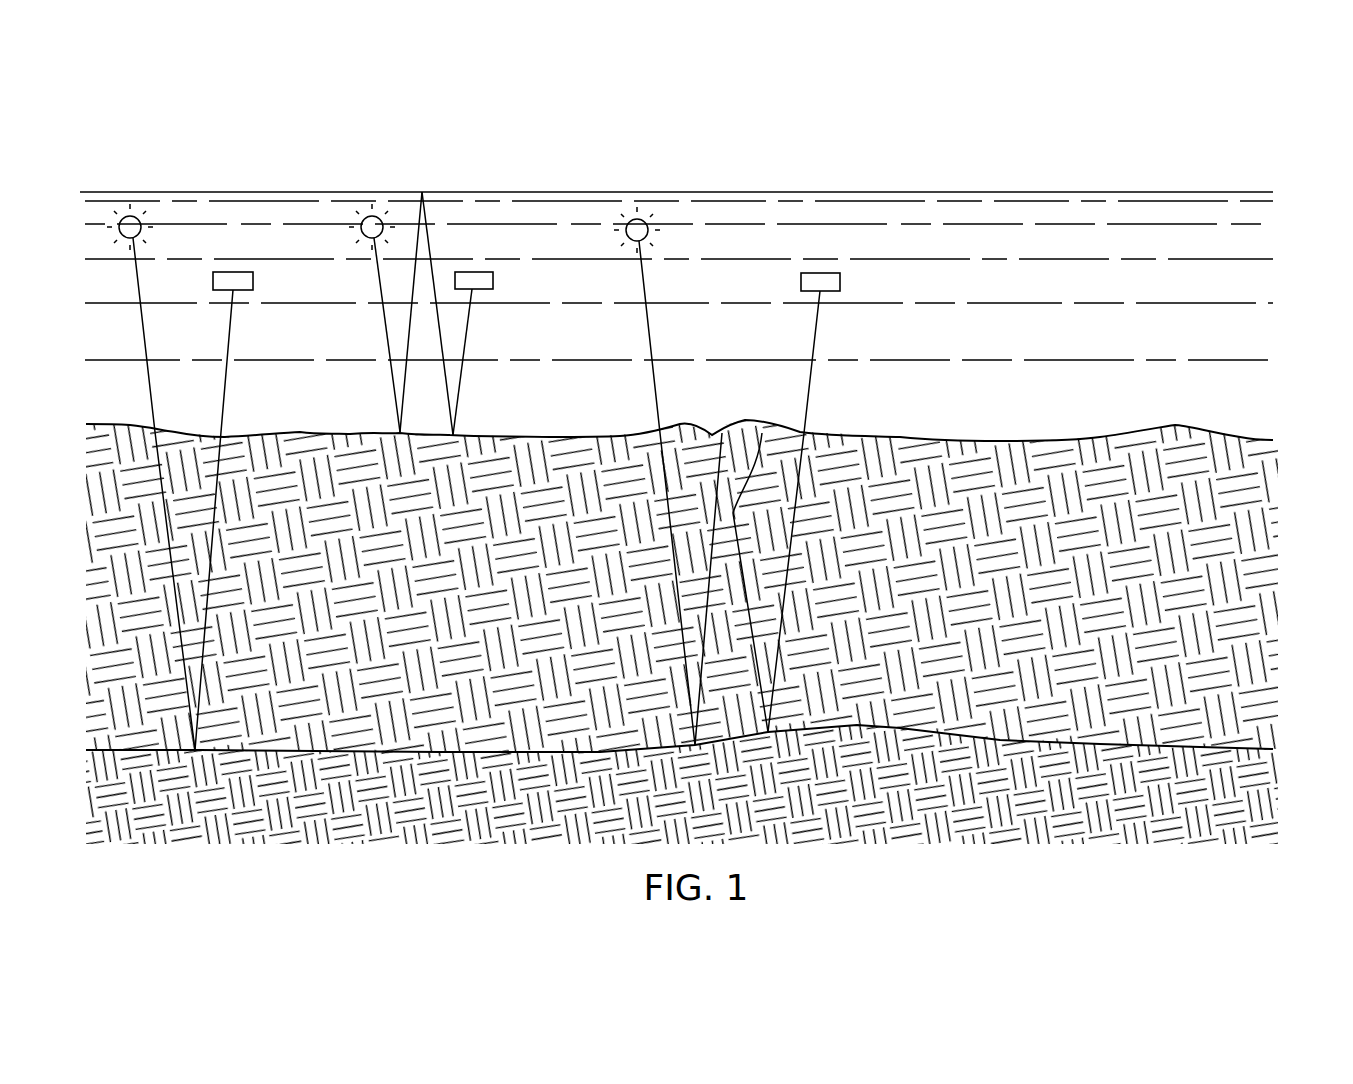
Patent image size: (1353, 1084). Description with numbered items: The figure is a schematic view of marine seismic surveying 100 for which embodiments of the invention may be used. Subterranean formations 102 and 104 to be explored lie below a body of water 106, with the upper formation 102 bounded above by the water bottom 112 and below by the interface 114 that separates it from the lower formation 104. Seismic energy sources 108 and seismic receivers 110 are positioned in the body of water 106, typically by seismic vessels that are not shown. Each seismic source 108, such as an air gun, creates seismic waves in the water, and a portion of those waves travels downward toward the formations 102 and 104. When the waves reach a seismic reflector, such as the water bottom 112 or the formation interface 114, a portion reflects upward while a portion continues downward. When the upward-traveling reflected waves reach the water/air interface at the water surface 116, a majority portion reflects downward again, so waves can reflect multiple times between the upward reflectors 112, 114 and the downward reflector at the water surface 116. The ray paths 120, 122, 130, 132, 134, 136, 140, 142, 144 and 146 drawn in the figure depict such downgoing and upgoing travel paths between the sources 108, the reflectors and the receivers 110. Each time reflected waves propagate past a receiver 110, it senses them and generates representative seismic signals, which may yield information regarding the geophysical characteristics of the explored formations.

The marine seismic surveying 100 is at (261, 152).
The subterranean formation 102 is at (629, 596).
The subterranean formation 104 is at (640, 808).
The body of water 106 is at (284, 405).
The seismic energy source 108 is at (132, 216).
The seismic receiver 110 is at (253, 281).
The water bottom 112 is at (1243, 438).
The interface 114 is at (1253, 745).
The water surface 116 is at (1248, 192).
The downgoing direct wave ray 120 is at (143, 335).
The reflected ray to receiver 122 is at (229, 335).
The downgoing ray 130 is at (386, 333).
The upgoing reflected ray 132 is at (407, 351).
The surface-reflected downgoing ray 134 is at (428, 235).
The ray to receiver 136 is at (467, 351).
The downgoing ray 140 is at (649, 331).
The upgoing reflected ray 142 is at (693, 432).
The refracted ray 144 is at (762, 430).
The ray to receiver 146 is at (809, 391).